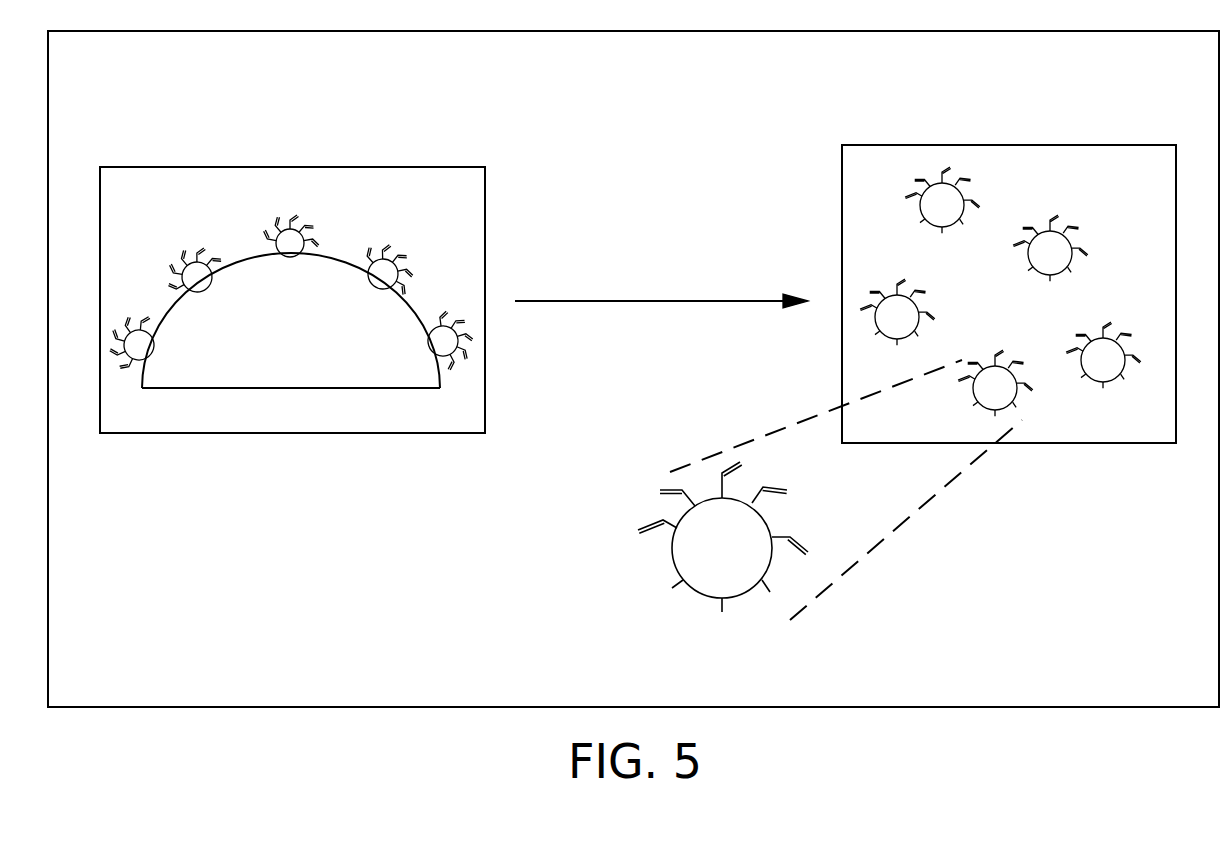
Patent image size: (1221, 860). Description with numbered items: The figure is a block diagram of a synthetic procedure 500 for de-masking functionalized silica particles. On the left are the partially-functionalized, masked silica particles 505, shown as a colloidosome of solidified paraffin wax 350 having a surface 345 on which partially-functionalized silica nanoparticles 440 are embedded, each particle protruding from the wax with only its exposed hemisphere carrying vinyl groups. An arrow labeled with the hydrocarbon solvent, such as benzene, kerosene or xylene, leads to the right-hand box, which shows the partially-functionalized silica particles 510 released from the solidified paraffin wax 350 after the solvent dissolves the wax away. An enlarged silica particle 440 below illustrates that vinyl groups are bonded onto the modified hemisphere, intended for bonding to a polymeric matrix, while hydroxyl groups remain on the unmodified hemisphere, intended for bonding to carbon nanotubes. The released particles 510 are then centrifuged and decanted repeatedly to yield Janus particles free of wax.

The synthetic procedure 500 is at (192, 145).
The partially-functionalized, masked silica particles 505 is at (290, 433).
The solidified paraffin wax 350 is at (348, 373).
The surface 345 is at (247, 252).
The partially-functionalized silica particles 440 is at (312, 245).
The partially-functionalized silica particles released from wax 510 is at (1007, 443).